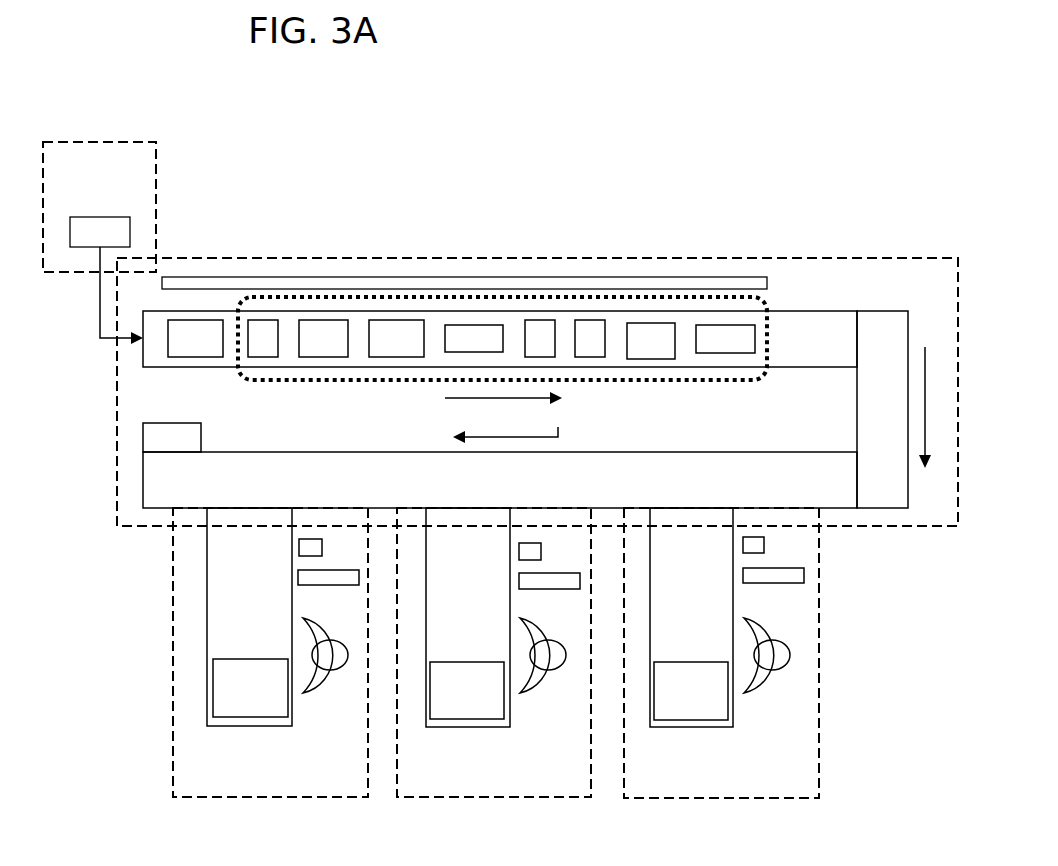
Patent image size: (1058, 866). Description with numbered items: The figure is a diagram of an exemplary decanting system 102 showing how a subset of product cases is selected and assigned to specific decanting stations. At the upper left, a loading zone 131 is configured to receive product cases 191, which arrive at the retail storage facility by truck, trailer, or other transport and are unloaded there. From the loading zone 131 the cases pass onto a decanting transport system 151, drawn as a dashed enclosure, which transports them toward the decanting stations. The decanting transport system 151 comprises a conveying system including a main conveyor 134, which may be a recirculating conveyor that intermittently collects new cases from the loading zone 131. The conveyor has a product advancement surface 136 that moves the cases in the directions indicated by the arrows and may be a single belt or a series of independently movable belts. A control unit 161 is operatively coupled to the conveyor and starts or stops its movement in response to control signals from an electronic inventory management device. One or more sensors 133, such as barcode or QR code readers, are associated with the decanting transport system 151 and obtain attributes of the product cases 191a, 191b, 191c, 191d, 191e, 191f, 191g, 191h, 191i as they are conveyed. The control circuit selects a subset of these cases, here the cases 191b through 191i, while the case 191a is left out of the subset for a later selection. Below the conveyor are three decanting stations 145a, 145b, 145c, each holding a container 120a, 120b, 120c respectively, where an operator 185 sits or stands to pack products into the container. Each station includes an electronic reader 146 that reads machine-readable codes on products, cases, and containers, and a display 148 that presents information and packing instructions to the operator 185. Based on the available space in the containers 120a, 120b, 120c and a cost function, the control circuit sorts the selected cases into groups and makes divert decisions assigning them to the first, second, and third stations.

The decanting system 102 is at (480, 150).
The loading zone 131 is at (102, 142).
The product cases 191 is at (86, 242).
The decanting transport system 151 is at (197, 258).
The sensors 133 is at (483, 277).
The main conveyor 134 is at (800, 311).
The product advancement surface 136 is at (798, 348).
The control unit 161 is at (156, 447).
The product case 191a is at (198, 357).
The product case 191b is at (265, 357).
The product case 191c is at (320, 357).
The product case 191d is at (393, 357).
The product case 191e is at (478, 352).
The product case 191f is at (545, 357).
The product case 191g is at (593, 357).
The product case 191h is at (650, 359).
The product case 191i is at (723, 353).
The decanting station 145a is at (228, 797).
The decanting station 145b is at (447, 797).
The decanting station 145c is at (675, 797).
The container 120a is at (230, 700).
The container 120b is at (447, 700).
The container 120c is at (671, 700).
The electronic reader 146 is at (322, 547).
The display 148 is at (352, 580).
The operator 185 is at (322, 693).